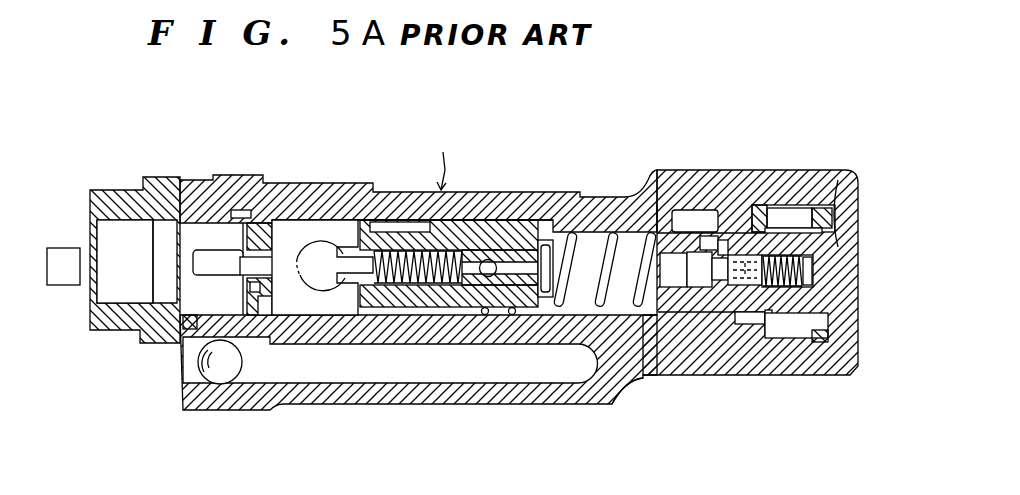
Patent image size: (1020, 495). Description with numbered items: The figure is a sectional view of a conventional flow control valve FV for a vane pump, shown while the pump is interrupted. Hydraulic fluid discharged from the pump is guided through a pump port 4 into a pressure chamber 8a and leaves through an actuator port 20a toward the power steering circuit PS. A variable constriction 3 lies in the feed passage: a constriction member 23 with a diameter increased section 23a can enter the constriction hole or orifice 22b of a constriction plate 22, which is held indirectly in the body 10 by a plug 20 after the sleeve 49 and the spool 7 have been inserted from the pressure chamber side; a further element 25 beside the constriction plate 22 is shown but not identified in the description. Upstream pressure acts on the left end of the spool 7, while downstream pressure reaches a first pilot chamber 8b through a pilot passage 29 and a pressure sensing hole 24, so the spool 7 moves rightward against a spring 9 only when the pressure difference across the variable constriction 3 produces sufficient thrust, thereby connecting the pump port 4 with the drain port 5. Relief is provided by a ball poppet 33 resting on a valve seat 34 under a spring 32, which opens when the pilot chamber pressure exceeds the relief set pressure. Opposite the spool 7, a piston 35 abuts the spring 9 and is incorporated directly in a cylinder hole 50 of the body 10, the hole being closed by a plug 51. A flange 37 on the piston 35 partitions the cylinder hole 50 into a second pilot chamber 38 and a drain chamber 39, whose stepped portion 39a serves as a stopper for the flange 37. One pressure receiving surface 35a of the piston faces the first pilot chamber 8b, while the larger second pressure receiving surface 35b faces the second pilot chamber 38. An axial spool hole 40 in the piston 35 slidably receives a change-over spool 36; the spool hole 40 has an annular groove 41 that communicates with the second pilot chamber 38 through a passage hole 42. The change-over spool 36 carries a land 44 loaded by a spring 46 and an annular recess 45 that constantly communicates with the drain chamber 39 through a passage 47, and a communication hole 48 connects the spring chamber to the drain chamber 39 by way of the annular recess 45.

The actuator port 20a is at (127, 233).
The plug 20 is at (160, 196).
The diameter increased section 23a is at (203, 256).
The seal ring 25 is at (243, 210).
The constriction plate 22 is at (277, 233).
The pressure chamber 8a is at (317, 223).
The body 10 is at (340, 200).
The spring 32 is at (432, 253).
The ball poppet 33 is at (486, 258).
The valve seat 34 is at (514, 245).
The first pilot chamber 8b is at (592, 235).
The spring 9 is at (617, 232).
The spool hole 40 is at (668, 250).
The cylinder hole 50 is at (693, 210).
The stepped portion 39a is at (660, 215).
The drain chamber 39 is at (715, 230).
The flange 37 is at (762, 210).
The passage 47 is at (708, 235).
The land 44 is at (742, 258).
The piston 35 is at (803, 233).
The second pressure receiving surface 35b is at (835, 235).
The spring 46 is at (828, 264).
The second pilot chamber 38 is at (812, 322).
The plug 51 is at (846, 360).
The constriction member 23 is at (185, 325).
The pressure sensing hole 24 is at (228, 345).
The variable constriction 3 is at (257, 318).
The constriction hole or orifice 22b is at (278, 300).
The pump port 4 is at (330, 300).
The drain port 5 is at (406, 250).
The spool 7 is at (458, 300).
The pilot passage 29 is at (500, 368).
The sleeve 49 is at (528, 310).
The first pressure receiving surface 35a is at (636, 380).
The change-over spool 36 is at (680, 300).
The annular groove 41 is at (715, 300).
The passage hole 42 is at (748, 320).
The annular recess 45 is at (738, 320).
The communication hole 48 is at (757, 318).
The flow control valve FV is at (445, 158).
The power steering circuit PS is at (90, 266).